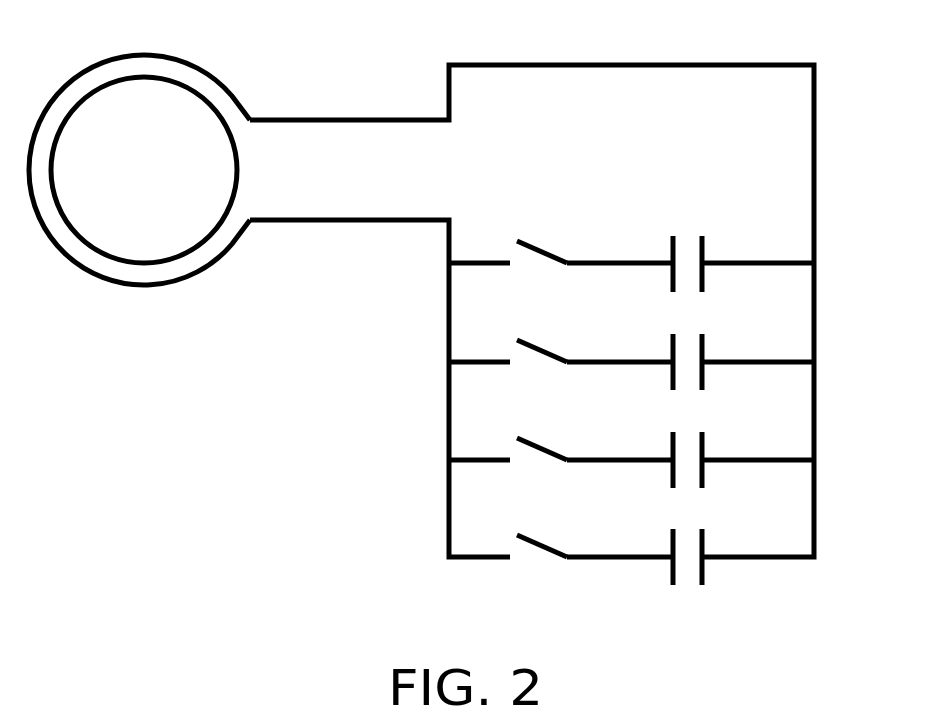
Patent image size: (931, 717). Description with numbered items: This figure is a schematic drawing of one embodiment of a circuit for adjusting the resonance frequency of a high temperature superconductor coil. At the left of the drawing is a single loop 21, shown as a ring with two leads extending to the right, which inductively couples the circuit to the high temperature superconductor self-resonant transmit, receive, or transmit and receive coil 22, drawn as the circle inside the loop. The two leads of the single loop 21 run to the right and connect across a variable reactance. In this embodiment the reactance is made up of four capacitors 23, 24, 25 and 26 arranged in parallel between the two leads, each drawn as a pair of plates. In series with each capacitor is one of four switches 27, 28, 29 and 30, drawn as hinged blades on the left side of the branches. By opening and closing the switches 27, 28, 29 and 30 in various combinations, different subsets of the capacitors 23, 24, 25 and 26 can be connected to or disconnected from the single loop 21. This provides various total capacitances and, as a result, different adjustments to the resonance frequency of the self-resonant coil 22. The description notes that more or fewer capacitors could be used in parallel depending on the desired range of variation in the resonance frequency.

The single loop 21 is at (211, 73).
The high temperature superconductor self-resonant coil 22 is at (131, 78).
The capacitor 23 is at (684, 242).
The capacitor 24 is at (684, 345).
The capacitor 25 is at (685, 445).
The capacitor 26 is at (685, 548).
The switch 27 is at (537, 261).
The switch 28 is at (537, 360).
The switch 29 is at (537, 458).
The switch 30 is at (537, 559).